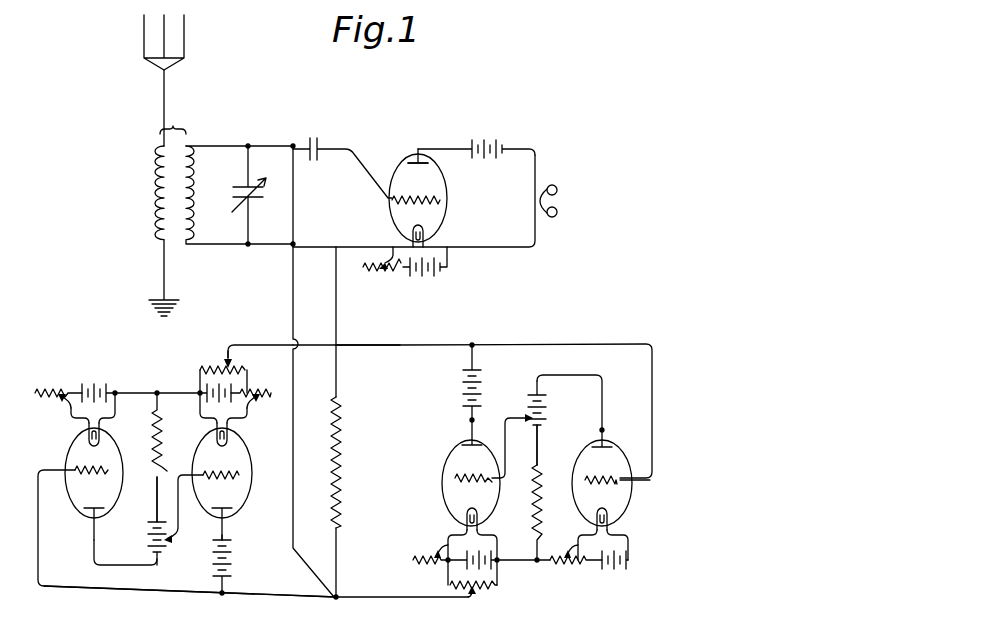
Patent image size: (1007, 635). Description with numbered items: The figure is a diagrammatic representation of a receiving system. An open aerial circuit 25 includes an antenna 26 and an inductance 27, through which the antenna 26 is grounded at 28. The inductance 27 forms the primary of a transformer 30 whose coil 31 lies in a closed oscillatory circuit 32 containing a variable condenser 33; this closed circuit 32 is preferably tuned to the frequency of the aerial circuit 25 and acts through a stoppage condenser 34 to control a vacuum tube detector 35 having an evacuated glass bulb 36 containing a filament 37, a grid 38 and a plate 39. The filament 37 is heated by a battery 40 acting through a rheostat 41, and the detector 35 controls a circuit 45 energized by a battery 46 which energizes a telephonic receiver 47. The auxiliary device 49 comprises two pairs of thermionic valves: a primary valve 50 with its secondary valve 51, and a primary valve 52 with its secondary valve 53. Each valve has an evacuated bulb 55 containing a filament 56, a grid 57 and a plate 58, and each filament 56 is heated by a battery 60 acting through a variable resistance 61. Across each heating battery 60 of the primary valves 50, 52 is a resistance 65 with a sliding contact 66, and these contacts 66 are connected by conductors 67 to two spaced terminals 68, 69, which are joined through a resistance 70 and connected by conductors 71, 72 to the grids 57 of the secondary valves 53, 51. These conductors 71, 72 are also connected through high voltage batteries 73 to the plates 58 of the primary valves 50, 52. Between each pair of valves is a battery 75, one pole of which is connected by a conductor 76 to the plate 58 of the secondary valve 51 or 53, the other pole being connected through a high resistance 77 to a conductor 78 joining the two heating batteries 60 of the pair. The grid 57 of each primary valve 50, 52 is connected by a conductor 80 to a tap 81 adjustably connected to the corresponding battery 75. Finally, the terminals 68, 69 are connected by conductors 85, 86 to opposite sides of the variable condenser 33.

The open aerial circuit 25 is at (146, 82).
The antenna 26 is at (158, 96).
The inductance 27 is at (154, 197).
The ground 28 is at (150, 316).
The transformer 30 is at (173, 123).
The coil or inductance 31 is at (192, 160).
The closed oscillatory circuit 32 is at (240, 195).
The variable condenser 33 is at (240, 195).
The stoppage condenser 34 is at (318, 142).
The vacuum tube detector 35 is at (428, 198).
The evacuated glass bulb 36 is at (414, 179).
The filament 37 is at (425, 231).
The grid or potential gradient changing means 38 is at (396, 203).
The plate or terminal 39 is at (412, 158).
The battery 40 is at (425, 271).
The variable resistance or rheostat 41 is at (381, 271).
The circuit 45 is at (414, 213).
The battery 46 is at (476, 140).
The telephonic receiver 47 is at (551, 190).
The auxiliary system or device 49 is at (472, 403).
The primary valve 50 is at (227, 473).
The secondary valve 51 is at (84, 473).
The primary valve 52 is at (462, 476).
The secondary valve 53 is at (602, 476).
The glass bulb or container 55 is at (445, 498).
The filament 56 is at (466, 517).
The grid or potential gradient changing means 57 is at (456, 478).
The terminal or plate 58 is at (466, 444).
The battery 60 is at (488, 569).
The variable resistance 61 is at (430, 556).
The resistance 65 is at (483, 588).
The sliding or adjustable contact 66 is at (471, 600).
The conductor 67 is at (314, 344).
The terminal 68 is at (337, 344).
The terminal 69 is at (338, 600).
The resistance 70 is at (337, 453).
The conductor 71 is at (404, 347).
The conductor 72 is at (140, 590).
The high voltage battery 73 is at (462, 388).
The battery 75 is at (543, 414).
The conductor 76 is at (556, 381).
The high resistance 77 is at (542, 514).
The conductor 78 is at (512, 559).
The conductor 80 is at (504, 432).
The tap 81 is at (532, 396).
The conductor 85 is at (334, 298).
The conductor 86 is at (291, 279).